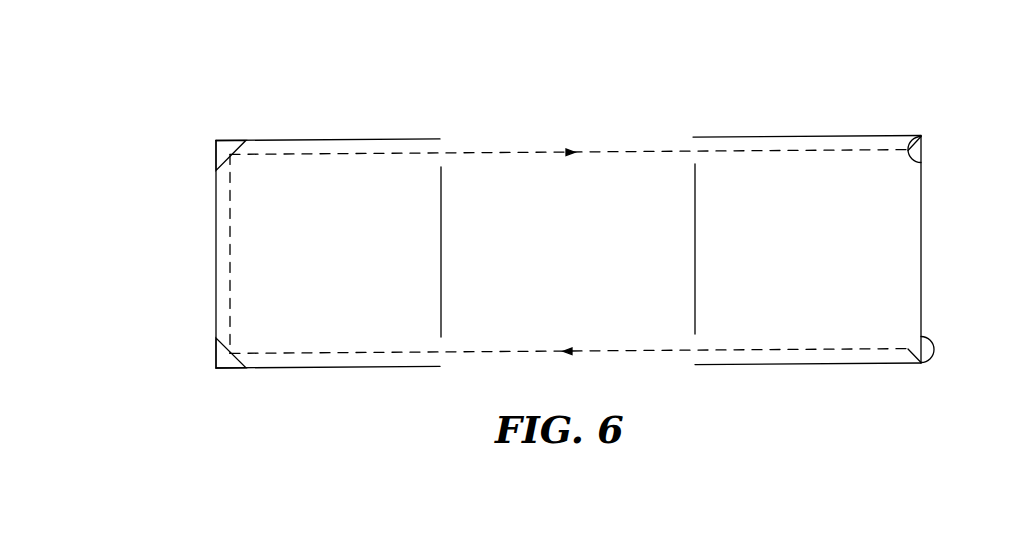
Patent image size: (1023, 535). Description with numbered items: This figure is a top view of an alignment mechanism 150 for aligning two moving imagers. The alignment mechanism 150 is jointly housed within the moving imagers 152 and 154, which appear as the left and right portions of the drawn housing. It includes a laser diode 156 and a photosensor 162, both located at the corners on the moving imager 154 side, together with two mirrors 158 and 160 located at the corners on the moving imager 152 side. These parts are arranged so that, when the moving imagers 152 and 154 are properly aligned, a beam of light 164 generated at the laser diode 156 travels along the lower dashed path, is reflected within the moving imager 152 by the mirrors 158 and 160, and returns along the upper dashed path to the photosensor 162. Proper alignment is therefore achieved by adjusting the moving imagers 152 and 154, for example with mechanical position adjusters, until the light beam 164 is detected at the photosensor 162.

The alignment mechanism 150 is at (457, 101).
The moving imager 152 is at (216, 271).
The moving imager 154 is at (922, 258).
The laser diode 156 is at (922, 363).
The mirror 158 is at (217, 369).
The mirror 160 is at (217, 139).
The photosensor 162 is at (922, 137).
The beam of light 164 is at (497, 153).